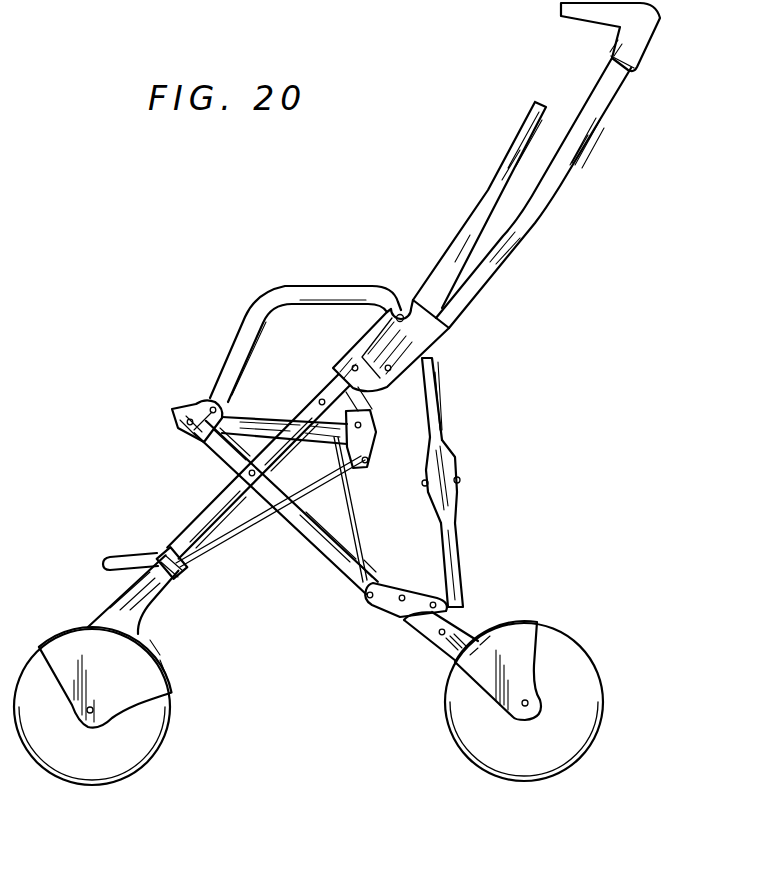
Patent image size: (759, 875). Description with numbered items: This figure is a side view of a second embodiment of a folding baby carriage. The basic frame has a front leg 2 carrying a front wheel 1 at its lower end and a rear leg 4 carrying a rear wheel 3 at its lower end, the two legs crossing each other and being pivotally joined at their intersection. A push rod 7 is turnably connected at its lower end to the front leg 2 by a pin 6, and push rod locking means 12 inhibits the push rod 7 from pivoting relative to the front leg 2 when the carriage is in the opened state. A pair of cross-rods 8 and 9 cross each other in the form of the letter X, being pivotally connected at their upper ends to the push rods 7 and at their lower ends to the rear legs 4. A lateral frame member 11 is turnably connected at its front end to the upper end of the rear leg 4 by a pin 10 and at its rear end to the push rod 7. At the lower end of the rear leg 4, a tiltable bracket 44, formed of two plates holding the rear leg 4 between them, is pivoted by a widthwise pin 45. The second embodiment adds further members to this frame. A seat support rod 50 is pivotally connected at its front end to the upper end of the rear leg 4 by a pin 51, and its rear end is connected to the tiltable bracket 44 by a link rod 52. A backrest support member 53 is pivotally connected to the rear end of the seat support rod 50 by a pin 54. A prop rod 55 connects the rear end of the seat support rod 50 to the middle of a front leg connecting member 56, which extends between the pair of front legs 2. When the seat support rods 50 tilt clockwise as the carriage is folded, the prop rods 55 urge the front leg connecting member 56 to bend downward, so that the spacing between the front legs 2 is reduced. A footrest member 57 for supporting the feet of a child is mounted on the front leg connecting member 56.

The front wheel 1 is at (152, 724).
The front leg 2 is at (200, 522).
The rear wheel 3 is at (567, 660).
The rear leg 4 is at (340, 548).
The pin 6 is at (404, 312).
The push rod 7 is at (535, 223).
The cross-rod 8 is at (437, 383).
The cross-rod 9 is at (458, 567).
The pin 10 is at (207, 400).
The lateral frame member 11 is at (309, 291).
The push rod locking means 12 is at (341, 327).
The tiltable bracket 44 is at (385, 598).
The pin 45 is at (402, 594).
The seat support rod 50 is at (240, 420).
The pin 51 is at (187, 425).
The link rod 52 is at (357, 503).
The backrest support member 53 is at (500, 165).
The pin 54 is at (372, 427).
The prop rod 55 is at (257, 526).
The front leg connecting member 56 is at (180, 572).
The footrest member 57 is at (115, 558).